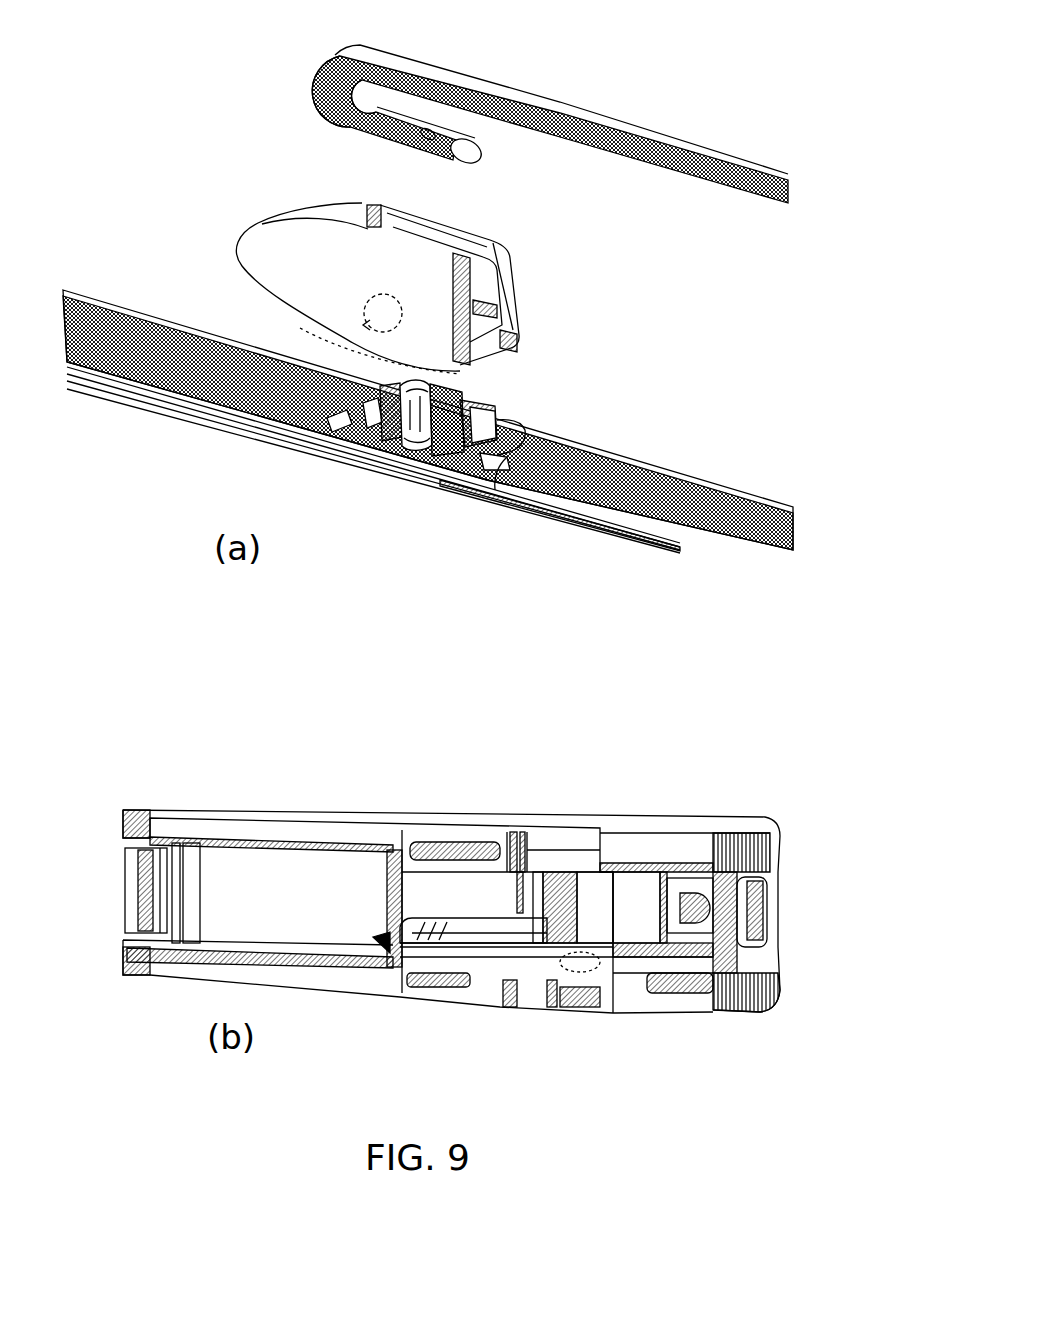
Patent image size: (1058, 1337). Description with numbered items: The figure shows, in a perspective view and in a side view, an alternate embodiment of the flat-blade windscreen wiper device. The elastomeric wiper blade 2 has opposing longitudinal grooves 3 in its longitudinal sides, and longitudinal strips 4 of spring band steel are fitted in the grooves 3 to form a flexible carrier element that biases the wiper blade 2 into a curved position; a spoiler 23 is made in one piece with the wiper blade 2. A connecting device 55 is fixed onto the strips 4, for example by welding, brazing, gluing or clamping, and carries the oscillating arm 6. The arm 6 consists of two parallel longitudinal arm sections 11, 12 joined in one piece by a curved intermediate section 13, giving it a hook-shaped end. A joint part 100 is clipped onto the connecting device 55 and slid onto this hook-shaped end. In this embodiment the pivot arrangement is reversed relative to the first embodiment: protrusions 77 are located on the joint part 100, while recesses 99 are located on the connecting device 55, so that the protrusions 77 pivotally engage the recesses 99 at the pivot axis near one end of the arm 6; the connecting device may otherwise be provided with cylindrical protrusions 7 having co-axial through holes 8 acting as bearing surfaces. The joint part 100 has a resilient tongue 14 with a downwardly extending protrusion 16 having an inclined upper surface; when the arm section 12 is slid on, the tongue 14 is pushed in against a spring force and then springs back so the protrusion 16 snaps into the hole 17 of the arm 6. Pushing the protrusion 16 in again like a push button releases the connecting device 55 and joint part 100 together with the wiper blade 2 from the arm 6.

The wiper blade 2 is at (102, 405).
The longitudinal grooves 3 is at (262, 432).
The longitudinal strips 4 is at (557, 528).
The oscillating arm 6 is at (735, 150).
The cylindrical protrusions 7 is at (445, 403).
The through holes 8 is at (497, 406).
The longitudinal arm section 11 is at (423, 68).
The longitudinal arm section 12 is at (468, 160).
The curved intermediate section 13 is at (323, 87).
The resilient tongue 14 is at (497, 316).
The downwardly extending protrusion 16 is at (688, 972).
The hole 17 is at (422, 141).
The spoiler 23 is at (106, 292).
The connecting device 55 is at (495, 410).
The protrusions 77 is at (367, 323).
The recesses 99 is at (396, 475).
The joint part 100 is at (280, 243).